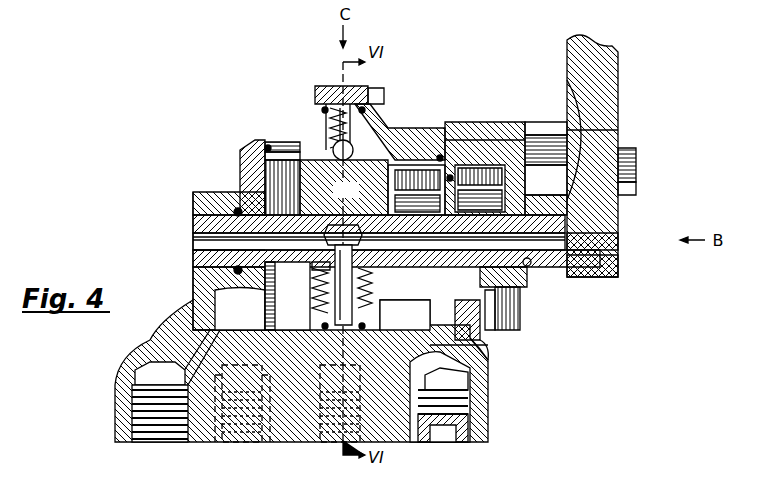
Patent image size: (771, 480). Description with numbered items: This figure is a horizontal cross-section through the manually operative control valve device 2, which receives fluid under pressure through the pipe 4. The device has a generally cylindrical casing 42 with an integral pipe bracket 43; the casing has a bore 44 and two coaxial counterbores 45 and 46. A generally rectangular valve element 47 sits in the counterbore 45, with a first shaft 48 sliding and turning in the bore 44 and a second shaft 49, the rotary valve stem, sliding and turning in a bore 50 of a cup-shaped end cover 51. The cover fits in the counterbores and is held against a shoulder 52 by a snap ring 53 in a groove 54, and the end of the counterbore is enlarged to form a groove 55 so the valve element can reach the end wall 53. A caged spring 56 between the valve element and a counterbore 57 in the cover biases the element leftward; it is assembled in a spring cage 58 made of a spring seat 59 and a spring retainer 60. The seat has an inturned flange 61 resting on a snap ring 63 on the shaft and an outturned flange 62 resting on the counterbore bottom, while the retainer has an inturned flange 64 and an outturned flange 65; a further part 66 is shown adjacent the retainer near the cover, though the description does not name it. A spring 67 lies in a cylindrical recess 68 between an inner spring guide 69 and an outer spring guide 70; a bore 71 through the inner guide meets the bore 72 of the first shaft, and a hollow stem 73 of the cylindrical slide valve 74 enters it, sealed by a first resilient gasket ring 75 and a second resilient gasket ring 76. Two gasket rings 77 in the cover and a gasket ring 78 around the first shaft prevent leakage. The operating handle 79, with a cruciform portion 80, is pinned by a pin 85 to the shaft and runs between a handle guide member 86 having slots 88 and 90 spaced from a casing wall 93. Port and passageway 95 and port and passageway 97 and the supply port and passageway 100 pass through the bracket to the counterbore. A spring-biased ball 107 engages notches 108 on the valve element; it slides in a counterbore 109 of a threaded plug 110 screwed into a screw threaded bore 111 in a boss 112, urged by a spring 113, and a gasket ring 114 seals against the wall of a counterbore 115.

The manually operative control valve device 2 is at (193, 197).
The pipe 4 is at (160, 442).
The casing 42 is at (253, 180).
The pipe bracket 43 is at (398, 440).
The bore 44 is at (230, 258).
The counterbore 45 is at (270, 150).
The counterbore 46 is at (462, 140).
The valve element 47 is at (344, 187).
The first shaft 48 is at (238, 272).
The second shaft 49 is at (605, 252).
The bore 50 is at (527, 268).
The end cover 51 is at (500, 345).
The shoulder 52 is at (447, 175).
The snap ring 53 is at (262, 168).
The groove 54 is at (510, 125).
The groove 55 is at (262, 150).
The caged spring 56 is at (440, 170).
The counterbore 57 is at (482, 332).
The spring cage 58 is at (437, 155).
The spring seat 59 is at (470, 170).
The spring retainer 60 is at (485, 352).
The inturned flange 61 is at (512, 305).
The outturned flange 62 is at (495, 315).
The snap ring 63 is at (510, 290).
The inturned flange 64 is at (392, 170).
The outturned flange 65 is at (460, 170).
The sealing ring 66 is at (495, 348).
The spring 67 is at (355, 265).
The cylindrical recess 68 is at (318, 278).
The inner spring guide 69 is at (318, 292).
The outer spring guide 70 is at (320, 312).
The bore 71 is at (320, 215).
The bore 72 is at (210, 243).
The hollow stem 73 is at (360, 238).
The cylindrical slide valve 74 is at (325, 330).
The first resilient gasket ring 75 is at (375, 335).
The second resilient gasket ring 76 is at (372, 300).
The resilient gasket rings 77 is at (600, 215).
The resilient gasket ring 78 is at (238, 214).
The operating handle 79 is at (600, 75).
The cruciform portion 80 is at (618, 85).
The pin 85 is at (610, 238).
The handle guide member 86 is at (634, 185).
The slot 88 is at (612, 128).
The slot 90 is at (634, 152).
The wall 93 is at (530, 145).
The port and passageway 95 is at (245, 442).
The port and passageway 97 is at (340, 470).
The supply port and passageway 100 is at (212, 330).
The spring-biased ball 107 is at (335, 140).
The notches 108 is at (333, 150).
The counterbore 109 is at (325, 88).
The threaded plug 110 is at (370, 90).
The screw threaded bore 111 is at (330, 125).
The boss 112 is at (328, 110).
The spring 113 is at (360, 112).
The resilient gasket ring 114 is at (322, 110).
The counterbore 115 is at (366, 106).